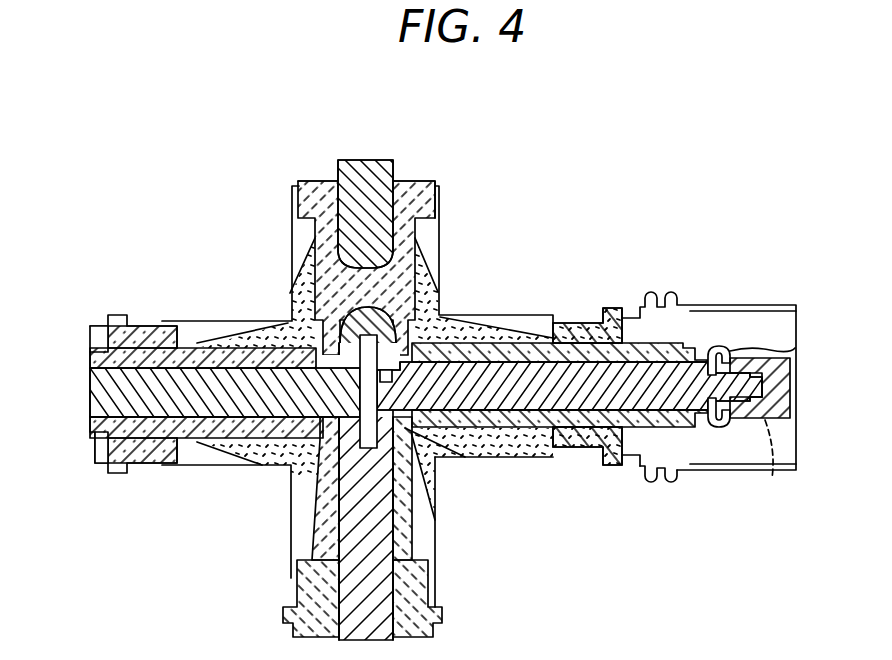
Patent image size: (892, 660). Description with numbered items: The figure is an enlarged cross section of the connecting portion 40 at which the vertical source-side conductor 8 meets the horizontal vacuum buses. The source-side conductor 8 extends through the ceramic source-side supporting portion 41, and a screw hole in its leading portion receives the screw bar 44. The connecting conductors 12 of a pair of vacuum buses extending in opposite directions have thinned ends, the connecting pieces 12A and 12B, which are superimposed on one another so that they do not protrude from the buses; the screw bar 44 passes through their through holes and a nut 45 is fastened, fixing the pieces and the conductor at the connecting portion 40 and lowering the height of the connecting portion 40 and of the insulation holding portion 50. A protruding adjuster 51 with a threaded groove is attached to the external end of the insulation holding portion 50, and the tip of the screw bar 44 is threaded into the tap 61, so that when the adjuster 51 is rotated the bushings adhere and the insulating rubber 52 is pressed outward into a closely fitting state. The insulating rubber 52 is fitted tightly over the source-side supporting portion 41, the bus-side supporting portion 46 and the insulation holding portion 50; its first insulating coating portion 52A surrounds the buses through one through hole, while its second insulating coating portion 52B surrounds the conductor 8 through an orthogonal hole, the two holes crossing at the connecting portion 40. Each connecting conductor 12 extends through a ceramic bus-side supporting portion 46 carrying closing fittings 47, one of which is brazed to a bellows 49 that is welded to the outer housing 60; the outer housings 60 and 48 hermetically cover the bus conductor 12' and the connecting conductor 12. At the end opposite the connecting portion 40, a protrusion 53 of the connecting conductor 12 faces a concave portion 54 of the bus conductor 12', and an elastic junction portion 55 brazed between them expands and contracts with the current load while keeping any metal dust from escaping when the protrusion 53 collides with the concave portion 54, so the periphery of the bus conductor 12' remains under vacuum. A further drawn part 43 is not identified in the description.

The source-side conductor 8 is at (383, 502).
The connecting conductor 12 is at (208, 393).
The bus conductor 12' is at (614, 420).
The connecting piece 12A is at (310, 490).
The connecting piece 12B is at (417, 457).
The connecting portion 40 is at (236, 214).
The source-side supporting portion 41 is at (438, 604).
The lower cone surface 43 is at (260, 465).
The screw bar 44 is at (417, 286).
The nut 45 is at (480, 312).
The bus-side supporting portion 46 is at (612, 308).
The closing fitting 47 is at (622, 462).
The outer housing 48 is at (232, 322).
The bellows 49 is at (682, 483).
The insulation holding portion 50 is at (437, 181).
The adjuster 51 is at (392, 160).
The insulating rubber 52 is at (439, 240).
The first insulating coating portion 52A is at (490, 335).
The second insulating coating portion 52B is at (290, 494).
The protrusion 53 is at (772, 478).
The concave portion 54 is at (776, 383).
The junction portion 55 is at (795, 349).
The outer housing 60 is at (730, 305).
The tap 61 is at (335, 322).